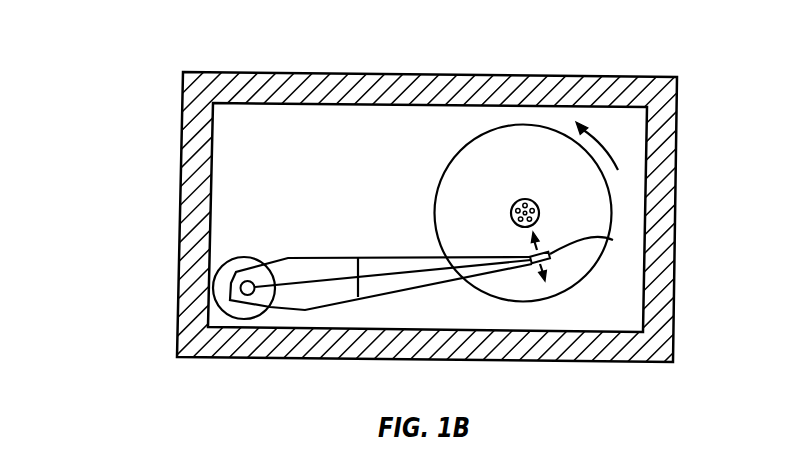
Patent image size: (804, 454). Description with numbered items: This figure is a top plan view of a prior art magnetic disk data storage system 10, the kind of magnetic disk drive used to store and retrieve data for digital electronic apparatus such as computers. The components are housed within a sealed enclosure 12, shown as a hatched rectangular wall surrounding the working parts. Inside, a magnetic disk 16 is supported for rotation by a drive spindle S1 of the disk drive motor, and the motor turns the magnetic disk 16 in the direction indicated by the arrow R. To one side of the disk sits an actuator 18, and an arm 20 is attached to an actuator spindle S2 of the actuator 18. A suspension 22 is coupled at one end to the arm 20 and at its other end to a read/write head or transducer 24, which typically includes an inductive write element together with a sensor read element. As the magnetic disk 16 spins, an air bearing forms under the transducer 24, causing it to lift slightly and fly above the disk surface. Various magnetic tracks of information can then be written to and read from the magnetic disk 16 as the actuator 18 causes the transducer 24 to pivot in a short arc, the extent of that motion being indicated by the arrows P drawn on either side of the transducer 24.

The magnetic disk data storage system 10 is at (166, 53).
The sealed enclosure 12 is at (293, 357).
The magnetic disk 16 is at (540, 164).
The actuator 18 is at (245, 262).
The arm 20 is at (315, 264).
The suspension 22 is at (387, 283).
The transducer 24 is at (594, 241).
The drive spindle S1 is at (532, 202).
The actuator spindle S2 is at (240, 286).
The arrow R is at (602, 146).
The arrows P is at (549, 253).